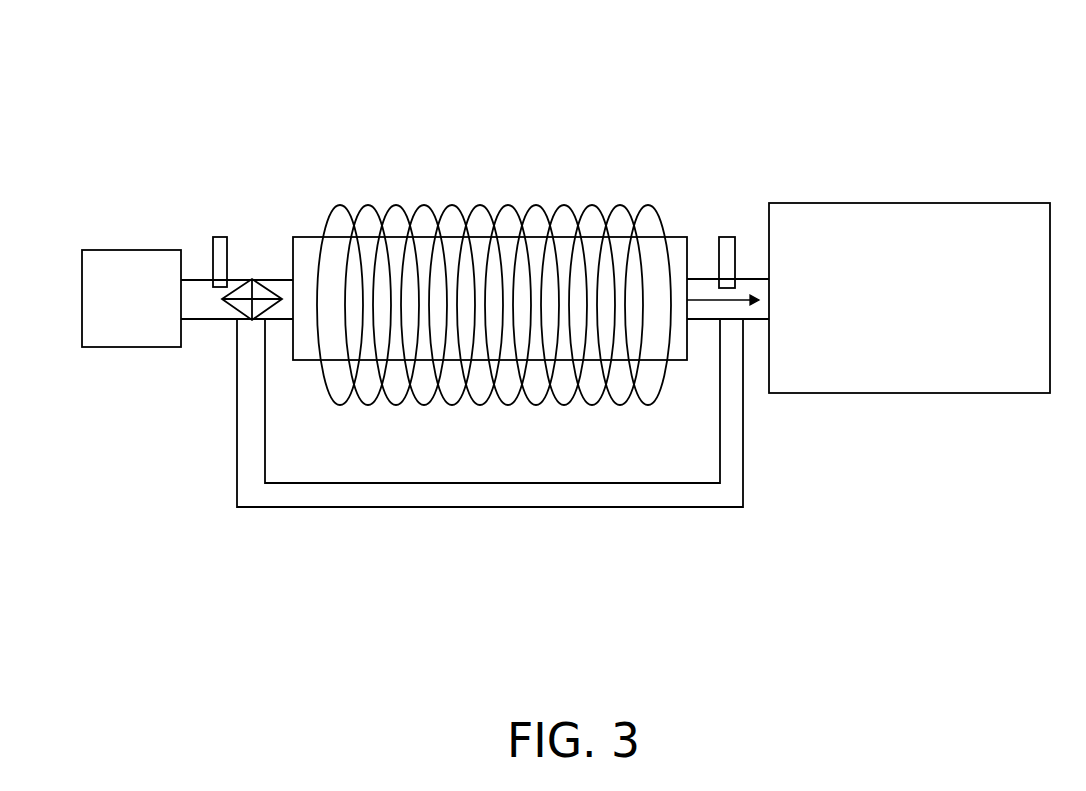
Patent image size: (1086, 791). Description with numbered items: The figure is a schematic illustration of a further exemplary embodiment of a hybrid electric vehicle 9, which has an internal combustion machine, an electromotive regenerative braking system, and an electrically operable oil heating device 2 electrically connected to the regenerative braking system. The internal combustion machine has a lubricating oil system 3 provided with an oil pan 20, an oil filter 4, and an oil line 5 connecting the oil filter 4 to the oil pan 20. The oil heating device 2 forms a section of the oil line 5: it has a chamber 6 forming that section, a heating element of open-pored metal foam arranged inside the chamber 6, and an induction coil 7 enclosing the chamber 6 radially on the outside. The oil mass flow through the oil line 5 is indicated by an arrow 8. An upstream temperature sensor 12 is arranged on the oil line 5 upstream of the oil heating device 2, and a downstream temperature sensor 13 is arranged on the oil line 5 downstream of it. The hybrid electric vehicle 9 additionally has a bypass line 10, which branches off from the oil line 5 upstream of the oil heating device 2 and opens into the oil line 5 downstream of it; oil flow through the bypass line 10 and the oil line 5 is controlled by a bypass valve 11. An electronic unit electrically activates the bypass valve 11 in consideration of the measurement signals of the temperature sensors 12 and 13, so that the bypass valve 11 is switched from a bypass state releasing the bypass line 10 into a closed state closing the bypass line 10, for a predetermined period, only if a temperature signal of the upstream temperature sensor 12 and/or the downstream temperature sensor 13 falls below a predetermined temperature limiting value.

The oil heating device 2 is at (483, 265).
The lubricating oil system 3 is at (191, 262).
The oil filter 4 is at (923, 377).
The oil line 5 is at (271, 265).
The chamber 6 is at (312, 335).
The induction coil 7 is at (568, 198).
The arrow 8 is at (703, 298).
The hybrid electric vehicle 9 is at (703, 122).
The bypass line 10 is at (469, 495).
The bypass valve 11 is at (245, 325).
The upstream temperature sensor 12 is at (220, 255).
The downstream temperature sensor 13 is at (726, 257).
The oil pan 20 is at (131, 298).